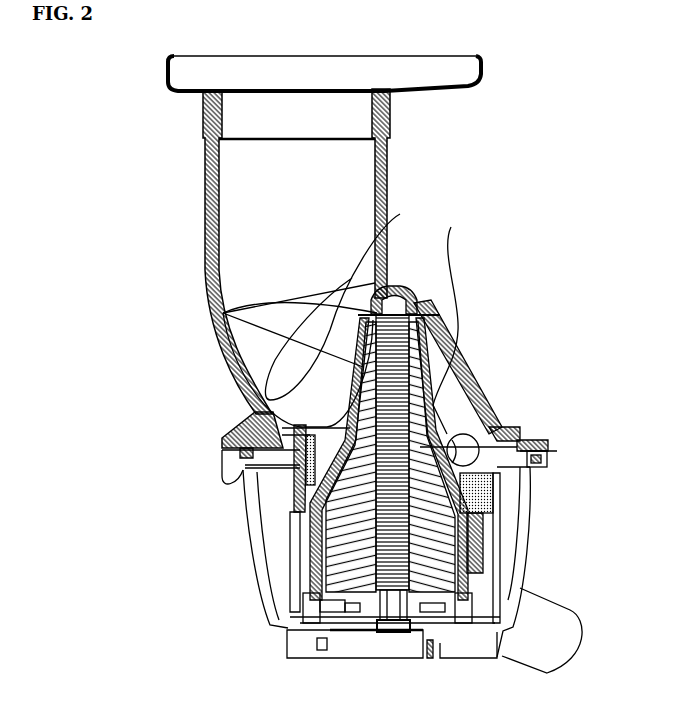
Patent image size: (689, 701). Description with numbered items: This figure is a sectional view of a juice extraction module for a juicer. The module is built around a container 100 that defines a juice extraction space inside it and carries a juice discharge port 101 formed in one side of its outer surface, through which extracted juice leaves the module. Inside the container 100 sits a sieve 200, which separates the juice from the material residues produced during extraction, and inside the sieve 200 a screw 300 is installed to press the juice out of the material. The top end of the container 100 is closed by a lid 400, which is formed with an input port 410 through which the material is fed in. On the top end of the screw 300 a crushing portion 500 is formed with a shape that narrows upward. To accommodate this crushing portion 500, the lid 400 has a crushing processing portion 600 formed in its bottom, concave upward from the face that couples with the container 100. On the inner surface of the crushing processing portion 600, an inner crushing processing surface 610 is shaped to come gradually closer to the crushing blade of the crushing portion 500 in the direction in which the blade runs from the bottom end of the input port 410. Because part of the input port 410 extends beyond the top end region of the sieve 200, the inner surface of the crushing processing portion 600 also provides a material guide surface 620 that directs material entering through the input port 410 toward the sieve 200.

The container 100 is at (257, 555).
The juice discharge port 101 is at (586, 623).
The sieve 200 is at (280, 491).
The screw 300 is at (522, 438).
The lid 400 is at (170, 191).
The input port 410 is at (205, 231).
The crushing portion 500 is at (447, 407).
The crushing processing portion 600 is at (458, 203).
The inner crushing processing surface 610 is at (456, 336).
The material guide surface 620 is at (347, 296).